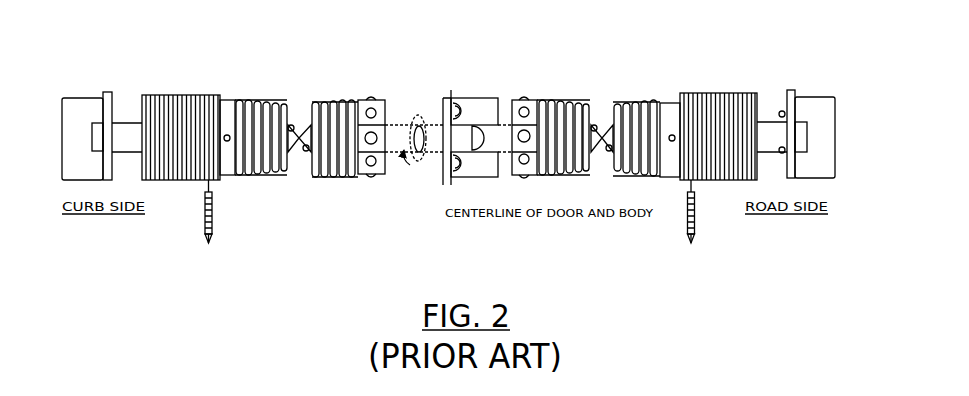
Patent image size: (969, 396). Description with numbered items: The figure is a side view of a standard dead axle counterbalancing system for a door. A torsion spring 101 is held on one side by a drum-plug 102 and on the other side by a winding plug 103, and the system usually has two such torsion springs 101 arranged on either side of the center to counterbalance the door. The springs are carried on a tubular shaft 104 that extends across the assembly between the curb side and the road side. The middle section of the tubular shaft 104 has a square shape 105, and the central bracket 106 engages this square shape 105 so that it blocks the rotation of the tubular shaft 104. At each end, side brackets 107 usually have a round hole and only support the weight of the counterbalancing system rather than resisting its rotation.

The torsion spring 101 is at (271, 91).
The drum-plug 102 is at (183, 92).
The winding plug 103 is at (368, 94).
The tubular shaft 104 is at (125, 117).
The square shape 105 is at (478, 120).
The central bracket 106 is at (442, 181).
The side brackets 107 is at (83, 91).